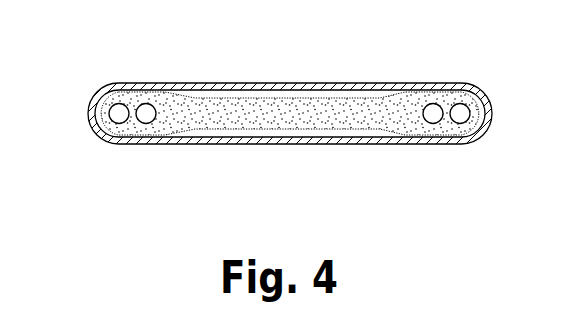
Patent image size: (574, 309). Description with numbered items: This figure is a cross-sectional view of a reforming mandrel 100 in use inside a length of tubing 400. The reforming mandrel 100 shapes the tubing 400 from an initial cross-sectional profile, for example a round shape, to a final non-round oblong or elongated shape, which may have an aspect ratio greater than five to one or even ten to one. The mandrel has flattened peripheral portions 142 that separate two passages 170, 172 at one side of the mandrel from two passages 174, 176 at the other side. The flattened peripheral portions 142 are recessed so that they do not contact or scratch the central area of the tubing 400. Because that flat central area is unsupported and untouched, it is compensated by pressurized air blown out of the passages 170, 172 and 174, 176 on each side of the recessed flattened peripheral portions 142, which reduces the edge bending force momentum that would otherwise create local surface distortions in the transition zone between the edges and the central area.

The reforming mandrel 100 is at (293, 130).
The flattened peripheral portions 142 is at (253, 98).
The tubing 400 is at (360, 141).
The passage 170 is at (462, 117).
The passage 172 is at (434, 117).
The passage 174 is at (118, 116).
The passage 176 is at (147, 117).